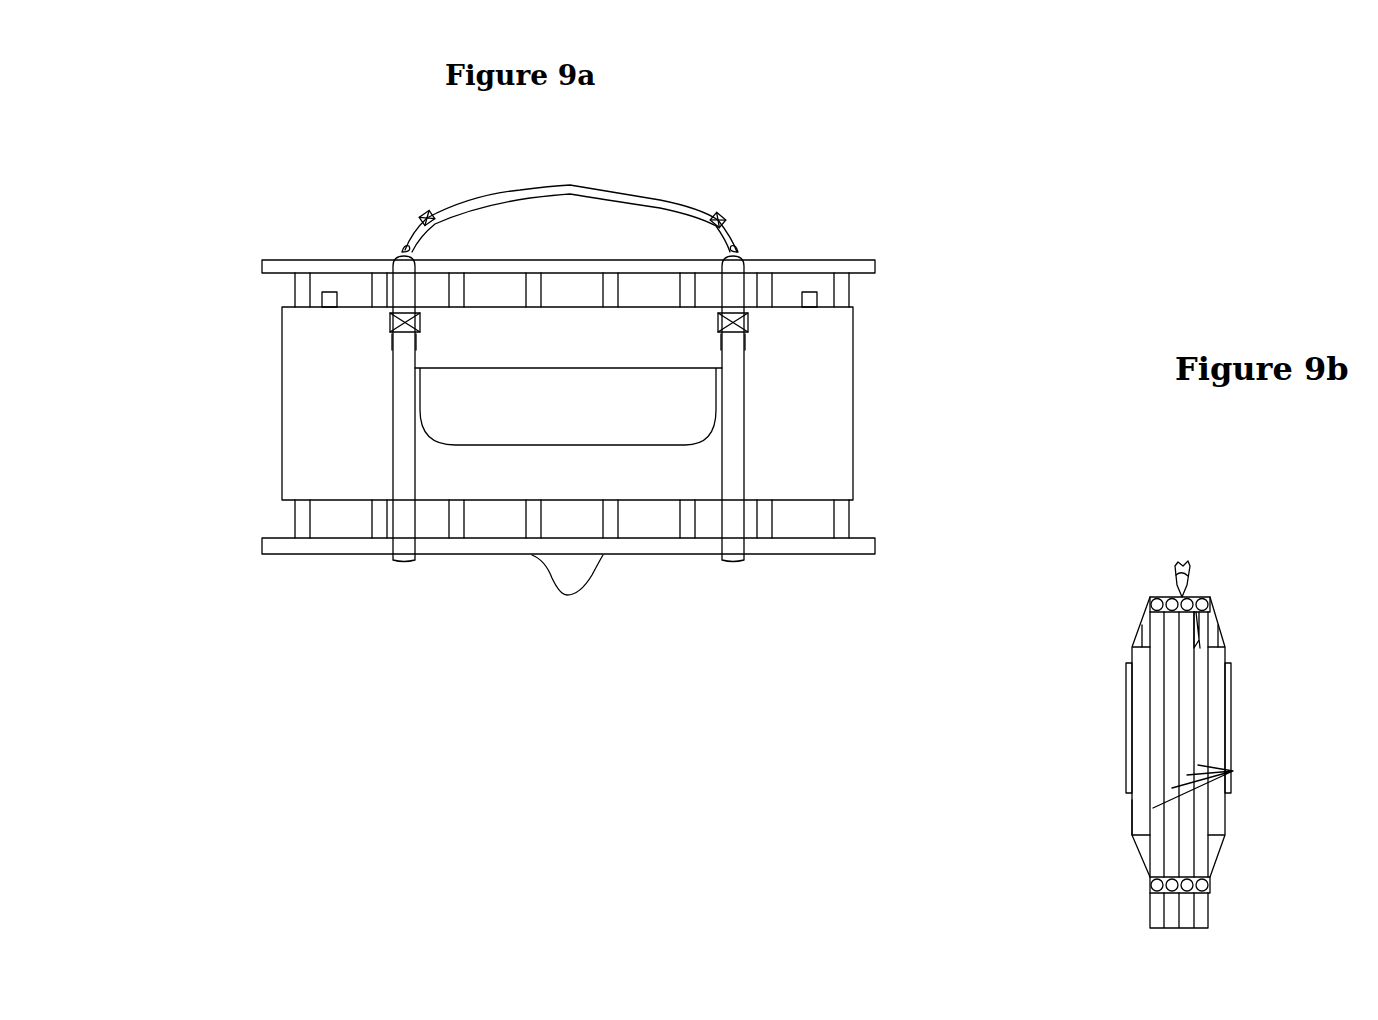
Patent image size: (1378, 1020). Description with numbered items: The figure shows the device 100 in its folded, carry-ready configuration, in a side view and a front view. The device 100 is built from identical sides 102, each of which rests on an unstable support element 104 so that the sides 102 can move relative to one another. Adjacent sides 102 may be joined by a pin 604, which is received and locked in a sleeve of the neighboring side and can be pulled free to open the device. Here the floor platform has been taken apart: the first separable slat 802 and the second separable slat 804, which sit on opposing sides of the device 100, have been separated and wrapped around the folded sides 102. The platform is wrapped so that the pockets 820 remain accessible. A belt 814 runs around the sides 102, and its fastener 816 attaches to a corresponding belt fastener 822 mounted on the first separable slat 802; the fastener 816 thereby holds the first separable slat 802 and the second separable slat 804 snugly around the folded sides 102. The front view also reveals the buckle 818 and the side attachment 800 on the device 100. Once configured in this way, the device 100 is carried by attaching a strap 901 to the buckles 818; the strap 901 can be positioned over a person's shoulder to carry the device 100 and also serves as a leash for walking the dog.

In FIG. 9A, the device 100 is at (757, 177).
In FIG. 9B, the device 100 is at (1068, 618).
In FIG. 9B, the side 102 is at (1233, 771).
In FIG. 9A, the unstable support element 104 is at (568, 578).
In FIG. 9B, the unstable support element 104 is at (1205, 918).
In FIG. 9B, the pin 604 is at (1208, 620).
In FIG. 9A, the side attachment 800 is at (330, 292).
In FIG. 9B, the side attachment 800 is at (1138, 645).
In FIG. 9A, the first separable slat 802 is at (290, 390).
In FIG. 9B, the first separable slat 802 is at (1217, 810).
In FIG. 9B, the second separable slat 804 is at (1128, 820).
In FIG. 9A, the belt 814 is at (402, 293).
In FIG. 9B, the belt 814 is at (1210, 622).
In FIG. 9A, the fastener 816 is at (416, 332).
In FIG. 9A, the buckle 818 is at (740, 250).
In FIG. 9B, the buckle 818 is at (1180, 596).
In FIG. 9A, the pocket 820 is at (601, 357).
In FIG. 9B, the pocket 820 is at (1127, 748).
In FIG. 9A, the belt fastener 822 is at (420, 314).
In FIG. 9A, the strap 901 is at (603, 186).
In FIG. 9B, the strap 901 is at (1192, 566).